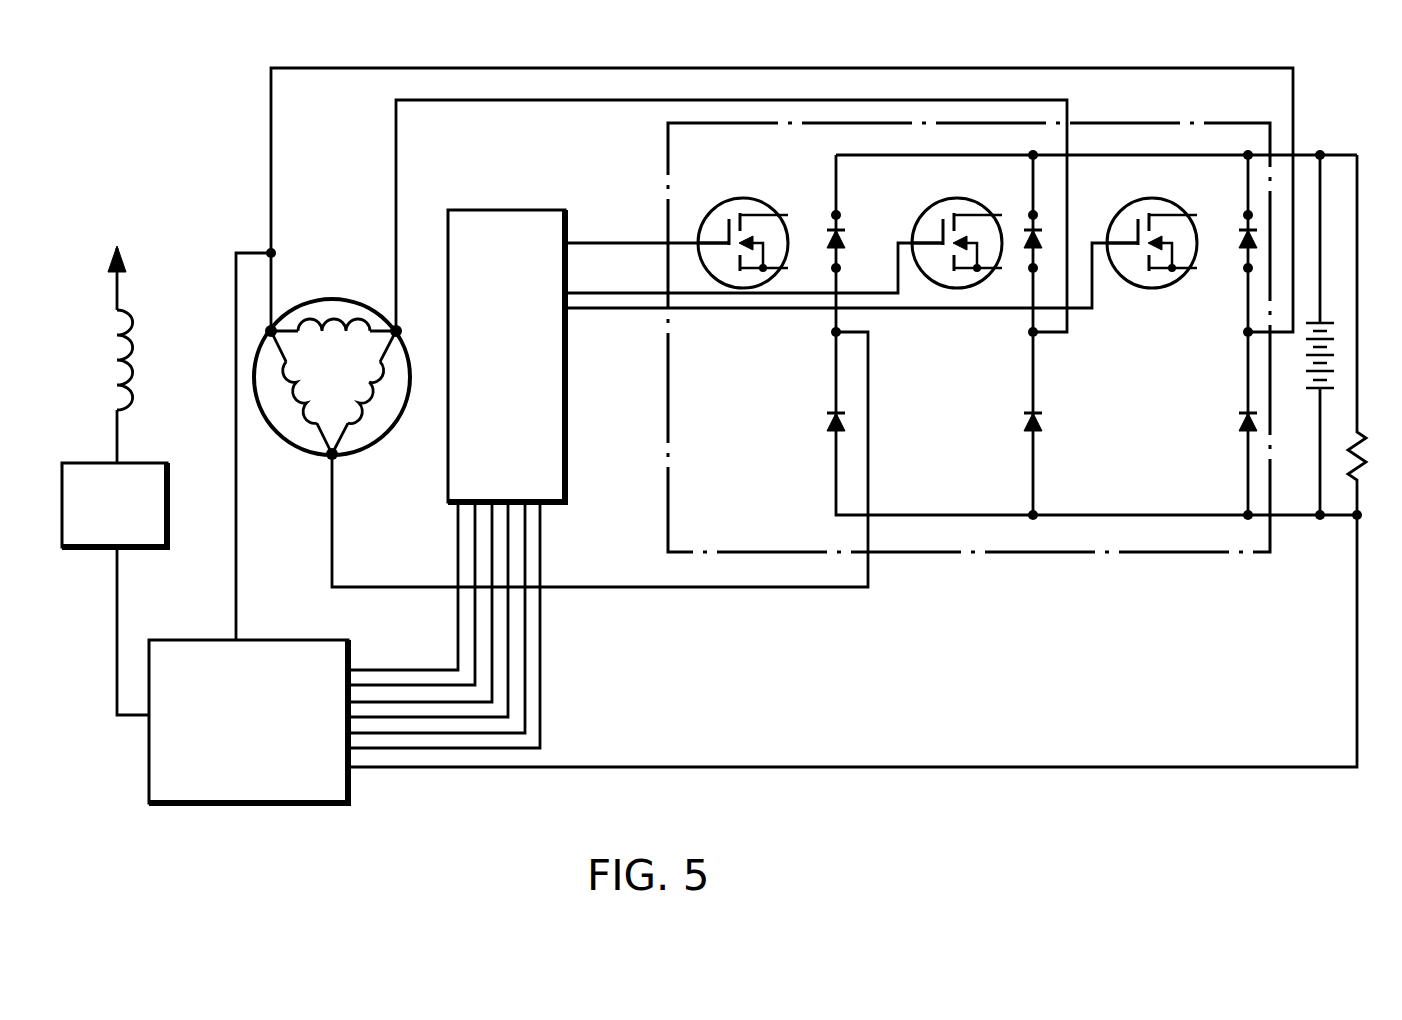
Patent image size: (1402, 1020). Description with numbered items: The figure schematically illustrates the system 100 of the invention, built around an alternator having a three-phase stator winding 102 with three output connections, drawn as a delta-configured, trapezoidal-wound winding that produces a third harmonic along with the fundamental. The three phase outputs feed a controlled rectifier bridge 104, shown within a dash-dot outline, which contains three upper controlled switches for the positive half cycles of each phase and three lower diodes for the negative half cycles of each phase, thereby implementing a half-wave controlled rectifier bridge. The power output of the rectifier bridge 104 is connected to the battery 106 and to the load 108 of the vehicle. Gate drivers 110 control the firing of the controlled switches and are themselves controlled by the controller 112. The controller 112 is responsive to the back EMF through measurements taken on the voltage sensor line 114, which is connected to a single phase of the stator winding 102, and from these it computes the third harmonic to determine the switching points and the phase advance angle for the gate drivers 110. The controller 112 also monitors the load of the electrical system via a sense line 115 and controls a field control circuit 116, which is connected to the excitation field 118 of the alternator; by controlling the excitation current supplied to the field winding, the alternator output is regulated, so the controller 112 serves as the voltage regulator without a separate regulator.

The system 100 is at (232, 136).
The three-phase stator winding 102 is at (334, 299).
The controlled rectifier bridge 104 is at (1140, 123).
The battery 106 is at (1318, 396).
The load 108 is at (1348, 464).
The gate drivers 110 is at (538, 210).
The controller 112 is at (184, 640).
The voltage sensor line 114 is at (236, 342).
The sense line 115 is at (1015, 767).
The field control circuit 116 is at (155, 463).
The excitation field 118 is at (118, 364).